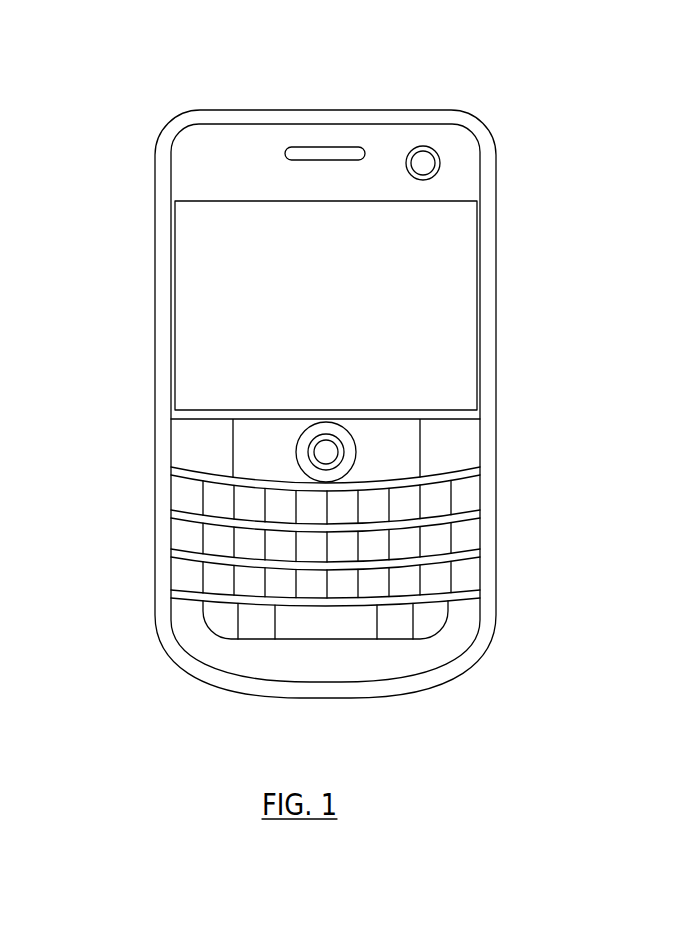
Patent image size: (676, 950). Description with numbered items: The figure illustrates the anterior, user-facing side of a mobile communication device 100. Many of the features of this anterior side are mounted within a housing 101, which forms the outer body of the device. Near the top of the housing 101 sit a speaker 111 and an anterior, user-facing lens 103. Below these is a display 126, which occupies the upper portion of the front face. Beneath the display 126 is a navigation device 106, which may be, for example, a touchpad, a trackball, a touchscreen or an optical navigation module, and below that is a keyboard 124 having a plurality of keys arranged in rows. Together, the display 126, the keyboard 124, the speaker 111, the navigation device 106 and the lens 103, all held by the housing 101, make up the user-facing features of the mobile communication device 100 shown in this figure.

The mobile communication device 100 is at (116, 94).
The housing 101 is at (155, 385).
The anterior lens 103 is at (442, 165).
The navigation device 106 is at (328, 435).
The speaker 111 is at (322, 147).
The keyboard 124 is at (507, 652).
The display 126 is at (343, 333).